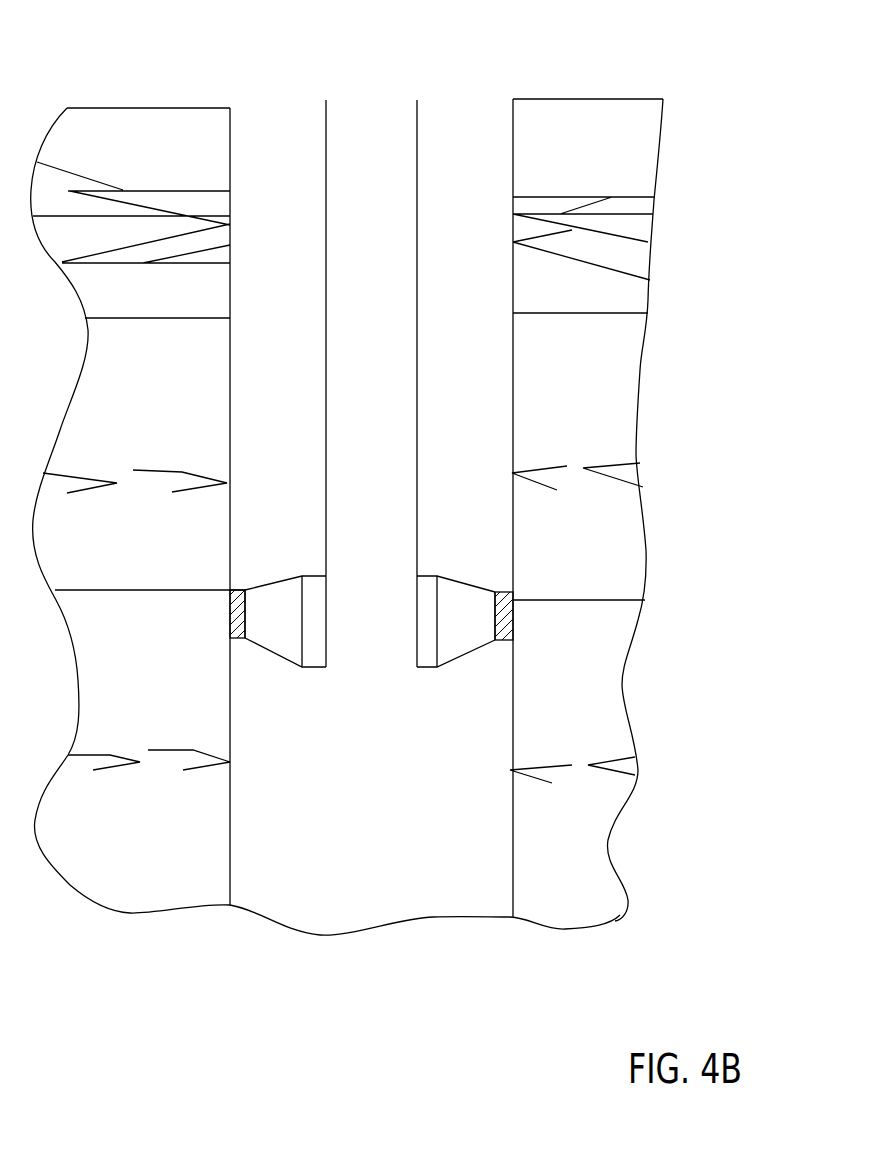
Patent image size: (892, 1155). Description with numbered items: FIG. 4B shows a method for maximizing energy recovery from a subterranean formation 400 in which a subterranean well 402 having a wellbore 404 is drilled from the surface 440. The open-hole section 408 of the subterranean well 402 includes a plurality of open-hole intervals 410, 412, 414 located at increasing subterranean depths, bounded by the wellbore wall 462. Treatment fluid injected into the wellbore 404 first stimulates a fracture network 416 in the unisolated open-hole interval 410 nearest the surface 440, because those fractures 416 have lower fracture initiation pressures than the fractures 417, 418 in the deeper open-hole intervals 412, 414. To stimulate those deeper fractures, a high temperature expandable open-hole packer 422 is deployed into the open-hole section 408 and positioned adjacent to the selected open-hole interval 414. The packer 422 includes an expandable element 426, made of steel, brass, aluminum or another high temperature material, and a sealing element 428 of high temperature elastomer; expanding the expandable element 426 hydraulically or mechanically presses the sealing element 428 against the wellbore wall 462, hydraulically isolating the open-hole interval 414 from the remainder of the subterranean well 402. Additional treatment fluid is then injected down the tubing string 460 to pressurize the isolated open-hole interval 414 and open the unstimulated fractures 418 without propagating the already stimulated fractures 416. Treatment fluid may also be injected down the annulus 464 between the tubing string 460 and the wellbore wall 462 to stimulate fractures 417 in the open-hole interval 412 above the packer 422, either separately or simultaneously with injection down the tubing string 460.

The subterranean formation 400 is at (167, 913).
The subterranean well 402 is at (264, 88).
The wellbore 404 is at (485, 74).
The open-hole section 408 is at (287, 124).
The open-hole interval 410 is at (397, 95).
The open-hole interval 412 is at (642, 363).
The open-hole interval 414 is at (623, 663).
The fracture network 416 is at (650, 278).
The fractures 417 is at (643, 488).
The fractures 418 is at (640, 767).
The high temperature expandable open-hole packer 422 is at (280, 582).
The expandable element 426 is at (458, 660).
The sealing element 428 is at (233, 638).
The surface 440 is at (593, 97).
The tubing string 460 is at (417, 185).
The wellbore wall 462 is at (513, 298).
The annulus 464 is at (492, 154).